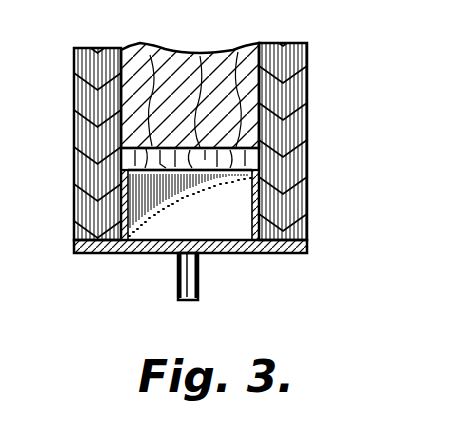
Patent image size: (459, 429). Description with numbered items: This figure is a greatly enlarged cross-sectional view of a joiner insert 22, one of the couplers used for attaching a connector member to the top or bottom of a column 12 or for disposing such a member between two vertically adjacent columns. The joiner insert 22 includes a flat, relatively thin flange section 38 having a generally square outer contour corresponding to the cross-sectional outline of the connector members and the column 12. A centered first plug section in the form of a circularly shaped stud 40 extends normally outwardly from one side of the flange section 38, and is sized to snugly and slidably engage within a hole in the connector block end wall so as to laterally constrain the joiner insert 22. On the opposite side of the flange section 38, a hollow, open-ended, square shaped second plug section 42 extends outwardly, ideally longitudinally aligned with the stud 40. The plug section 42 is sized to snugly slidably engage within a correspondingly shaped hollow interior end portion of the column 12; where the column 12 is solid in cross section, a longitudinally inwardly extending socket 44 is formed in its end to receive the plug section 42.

The column 12 is at (307, 90).
The joiner insert 22 is at (131, 268).
The flange section 38 is at (283, 253).
The stud 40 is at (198, 268).
The second plug section 42 is at (253, 205).
The socket 44 is at (233, 162).